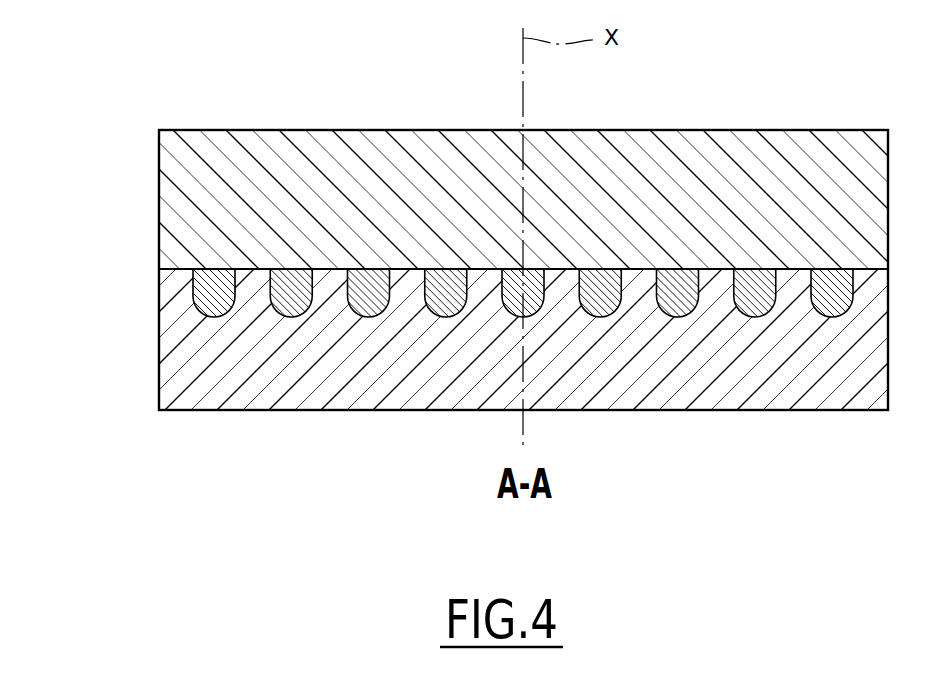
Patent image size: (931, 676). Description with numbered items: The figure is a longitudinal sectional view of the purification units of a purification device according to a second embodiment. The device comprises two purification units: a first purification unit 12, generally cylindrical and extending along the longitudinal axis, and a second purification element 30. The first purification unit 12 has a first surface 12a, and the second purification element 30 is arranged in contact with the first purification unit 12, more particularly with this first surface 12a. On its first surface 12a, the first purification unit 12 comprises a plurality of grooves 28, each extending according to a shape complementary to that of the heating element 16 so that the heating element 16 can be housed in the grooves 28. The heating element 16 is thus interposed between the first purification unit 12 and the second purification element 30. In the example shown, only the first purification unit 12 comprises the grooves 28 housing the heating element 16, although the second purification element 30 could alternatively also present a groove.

The first purification unit 12 is at (138, 333).
The first surface 12a is at (403, 268).
The heating element 16 is at (292, 287).
The groove 28 is at (668, 300).
The second purification element 30 is at (183, 206).